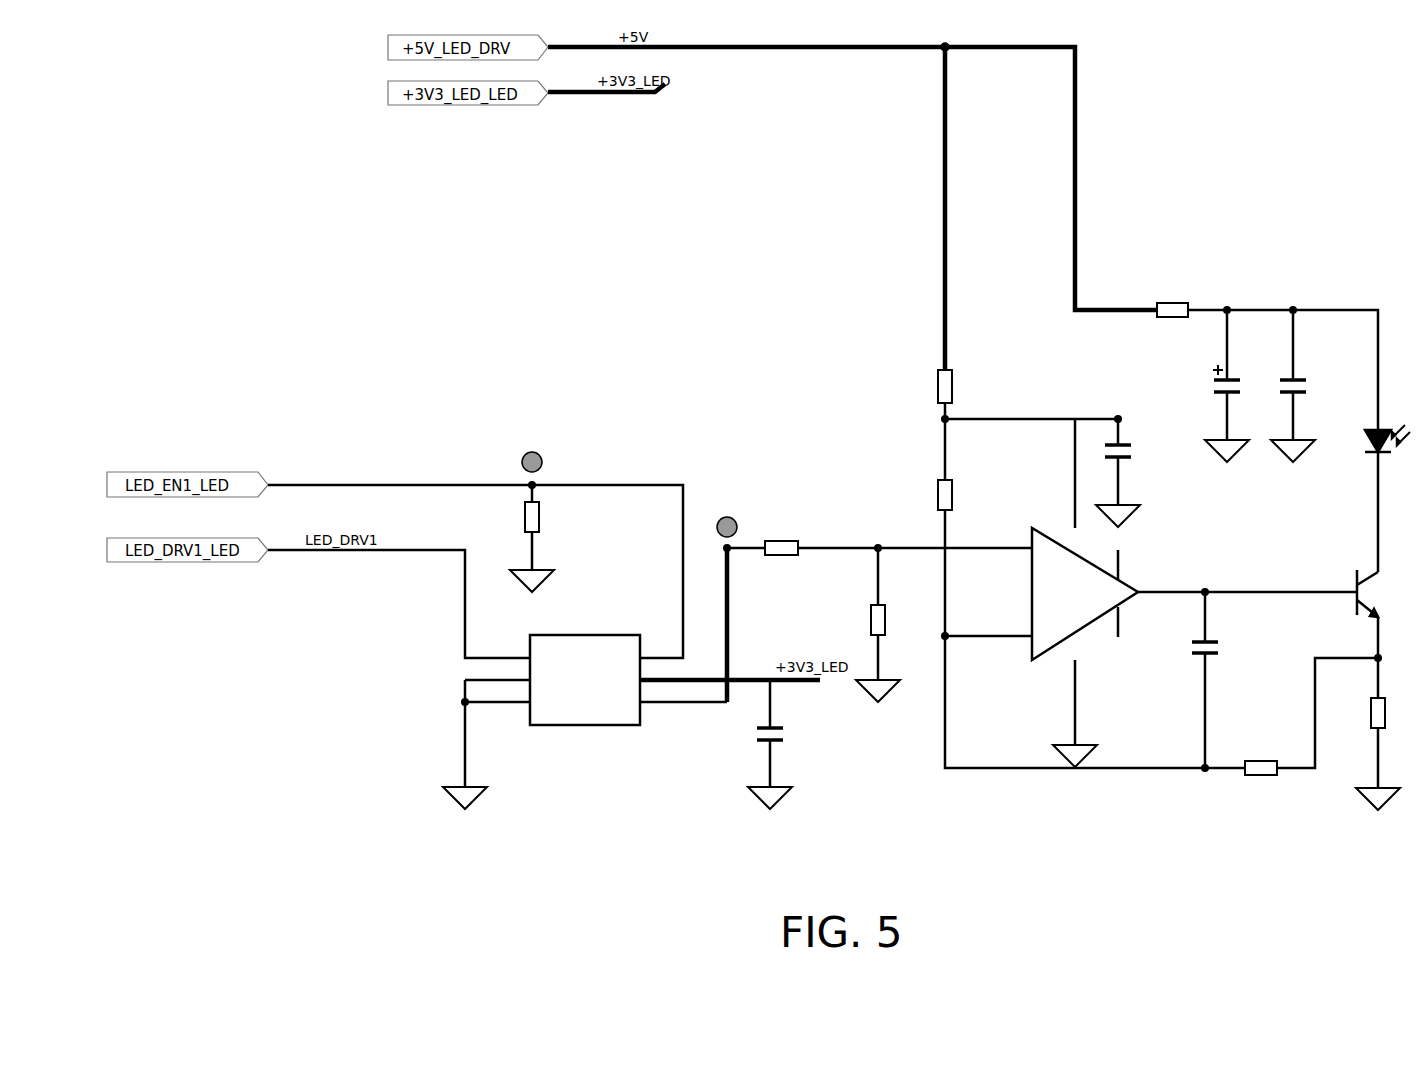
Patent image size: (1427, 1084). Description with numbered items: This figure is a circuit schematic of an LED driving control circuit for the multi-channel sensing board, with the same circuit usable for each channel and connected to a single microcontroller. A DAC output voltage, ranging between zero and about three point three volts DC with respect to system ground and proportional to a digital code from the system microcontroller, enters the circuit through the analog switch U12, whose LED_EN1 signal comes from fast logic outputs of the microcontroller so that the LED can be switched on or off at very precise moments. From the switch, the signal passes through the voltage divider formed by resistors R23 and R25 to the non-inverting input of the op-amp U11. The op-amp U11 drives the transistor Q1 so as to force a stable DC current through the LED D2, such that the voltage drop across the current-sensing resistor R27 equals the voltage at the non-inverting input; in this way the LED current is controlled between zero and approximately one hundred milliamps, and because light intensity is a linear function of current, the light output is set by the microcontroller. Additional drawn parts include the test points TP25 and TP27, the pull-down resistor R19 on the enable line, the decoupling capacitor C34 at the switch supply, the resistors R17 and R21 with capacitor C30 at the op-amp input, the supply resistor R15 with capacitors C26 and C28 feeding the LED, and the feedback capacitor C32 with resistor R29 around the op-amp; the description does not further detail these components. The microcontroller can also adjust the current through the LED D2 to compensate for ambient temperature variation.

The test point TP25 is at (535, 453).
The test point TP27 is at (730, 518).
The resistor 10K R19 is at (546, 521).
The analog switch U12 is at (586, 671).
The voltage divider resistor R23 is at (784, 554).
The voltage divider resistor R25 is at (837, 623).
The capacitor 100N C34 is at (788, 748).
The resistor 30.1R R17 is at (965, 389).
The resistor 2.7M R21 is at (962, 499).
The capacitor 100N C30 is at (1110, 440).
The op-amp U11 is at (1113, 601).
The resistor 13 R15 is at (1172, 310).
The electrolytic capacitor 47U C26 is at (1173, 381).
The capacitor 100N C28 is at (1312, 343).
The LED D2 is at (1395, 438).
The NPN transistor Q1 is at (1381, 593).
The capacitor 47P C32 is at (1220, 660).
The current-sensing resistor R27 is at (1394, 717).
The resistor 523R R29 is at (1241, 785).